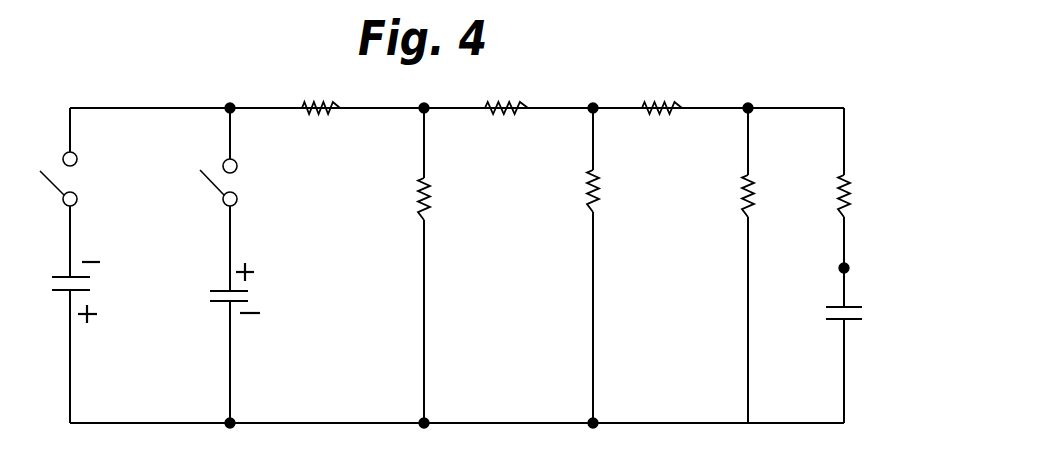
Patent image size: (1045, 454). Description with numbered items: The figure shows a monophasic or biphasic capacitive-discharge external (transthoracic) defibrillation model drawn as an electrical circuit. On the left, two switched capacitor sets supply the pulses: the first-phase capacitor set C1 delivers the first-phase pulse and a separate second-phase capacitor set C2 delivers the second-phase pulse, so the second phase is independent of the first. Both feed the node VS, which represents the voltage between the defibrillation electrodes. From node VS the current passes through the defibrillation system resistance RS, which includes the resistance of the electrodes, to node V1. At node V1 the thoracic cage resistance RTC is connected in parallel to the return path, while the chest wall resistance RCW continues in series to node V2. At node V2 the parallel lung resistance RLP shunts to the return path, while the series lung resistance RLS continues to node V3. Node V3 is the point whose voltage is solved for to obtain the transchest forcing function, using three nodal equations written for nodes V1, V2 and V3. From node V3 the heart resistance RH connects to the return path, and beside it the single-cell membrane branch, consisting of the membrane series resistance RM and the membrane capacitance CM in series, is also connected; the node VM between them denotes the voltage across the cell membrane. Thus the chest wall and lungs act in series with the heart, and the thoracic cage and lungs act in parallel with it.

The φ1 capacitor set C1 is at (59, 291).
The φ2 capacitor set C2 is at (215, 288).
The electrode voltage node VS is at (228, 246).
The defibrillation system resistance RS is at (321, 86).
The first node voltage V1 is at (418, 250).
The thoracic cage resistance RTC is at (445, 196).
The chest wall resistance RCW is at (510, 85).
The second node voltage V2 is at (585, 248).
The parallel lung resistance RLP is at (616, 188).
The series lung resistance RLS is at (662, 85).
The third node voltage V3 is at (746, 91).
The heart resistance RH is at (766, 194).
The membrane series resistance RM is at (861, 190).
The cell membrane voltage VM is at (863, 270).
The membrane capacitance CM is at (822, 310).